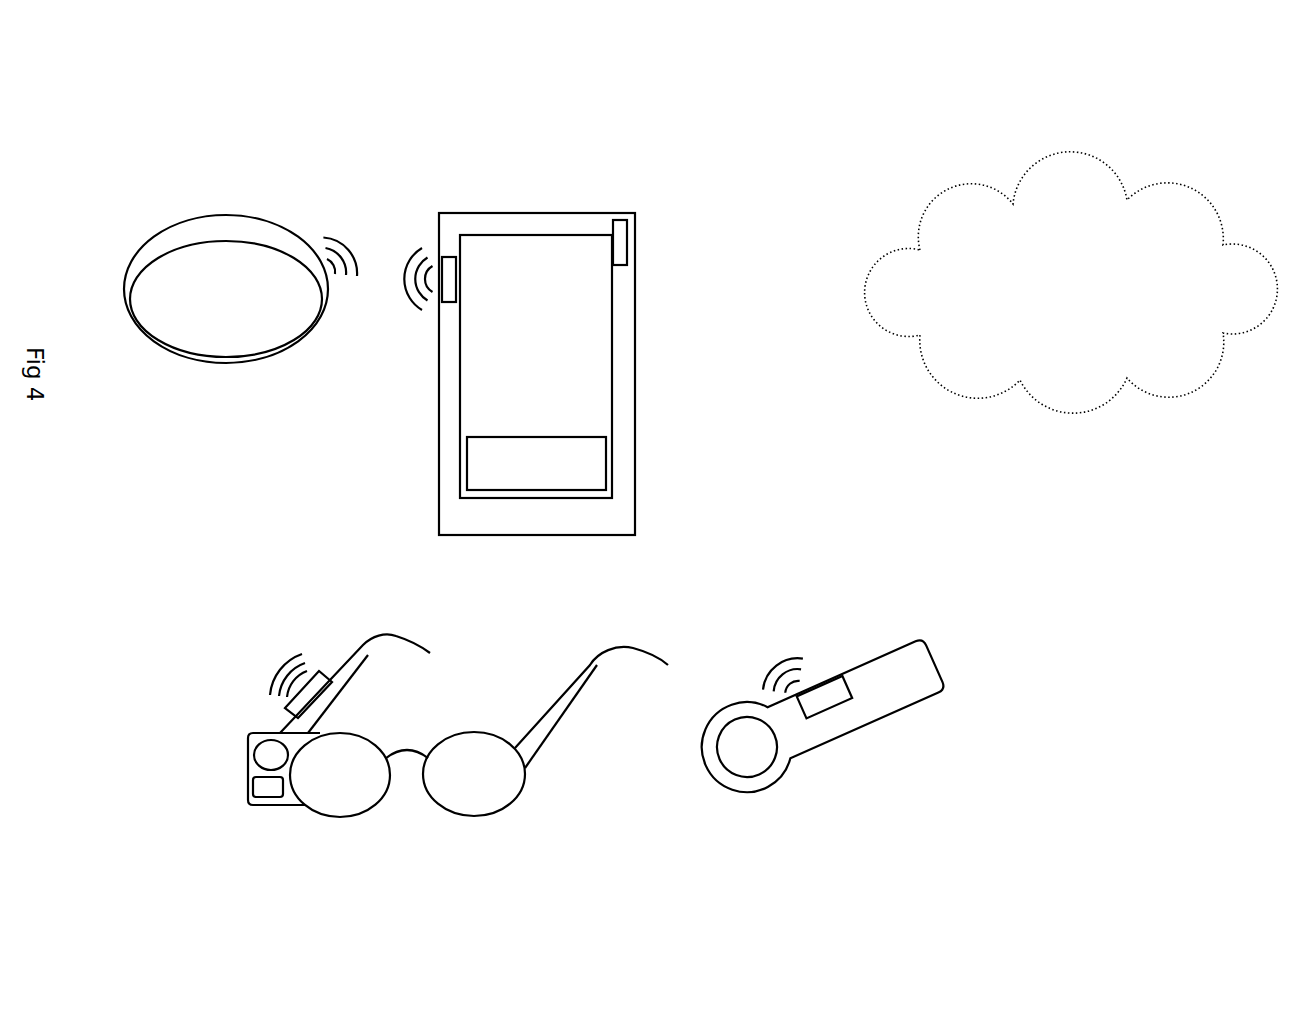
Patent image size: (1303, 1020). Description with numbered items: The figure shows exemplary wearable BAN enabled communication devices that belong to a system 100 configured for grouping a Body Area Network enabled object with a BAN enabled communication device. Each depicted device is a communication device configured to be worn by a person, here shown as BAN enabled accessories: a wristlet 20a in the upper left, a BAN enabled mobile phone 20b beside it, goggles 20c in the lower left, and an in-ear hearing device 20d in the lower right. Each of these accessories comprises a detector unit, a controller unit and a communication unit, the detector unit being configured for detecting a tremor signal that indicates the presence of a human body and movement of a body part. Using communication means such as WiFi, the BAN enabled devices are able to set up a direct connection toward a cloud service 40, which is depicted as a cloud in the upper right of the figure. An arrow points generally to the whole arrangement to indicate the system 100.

The wristlet 20a is at (208, 228).
The BAN enabled mobile phone 20b is at (540, 212).
The cloud service 40 is at (1087, 178).
The goggles 20c is at (368, 768).
The in-ear hearing device 20d is at (892, 638).
The system 100 is at (1152, 747).